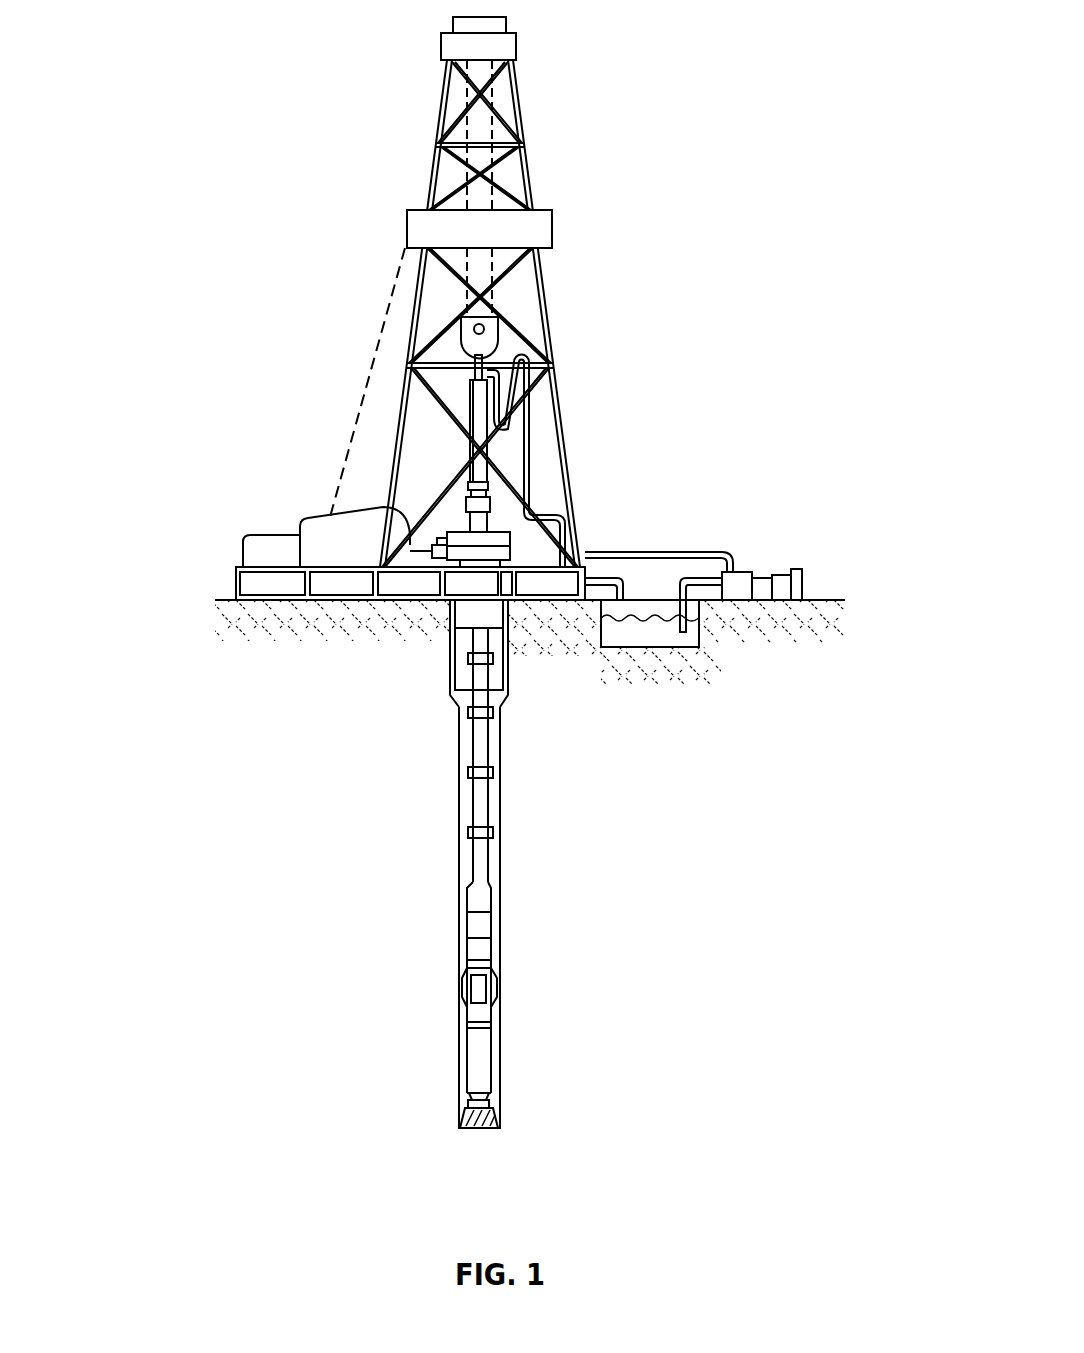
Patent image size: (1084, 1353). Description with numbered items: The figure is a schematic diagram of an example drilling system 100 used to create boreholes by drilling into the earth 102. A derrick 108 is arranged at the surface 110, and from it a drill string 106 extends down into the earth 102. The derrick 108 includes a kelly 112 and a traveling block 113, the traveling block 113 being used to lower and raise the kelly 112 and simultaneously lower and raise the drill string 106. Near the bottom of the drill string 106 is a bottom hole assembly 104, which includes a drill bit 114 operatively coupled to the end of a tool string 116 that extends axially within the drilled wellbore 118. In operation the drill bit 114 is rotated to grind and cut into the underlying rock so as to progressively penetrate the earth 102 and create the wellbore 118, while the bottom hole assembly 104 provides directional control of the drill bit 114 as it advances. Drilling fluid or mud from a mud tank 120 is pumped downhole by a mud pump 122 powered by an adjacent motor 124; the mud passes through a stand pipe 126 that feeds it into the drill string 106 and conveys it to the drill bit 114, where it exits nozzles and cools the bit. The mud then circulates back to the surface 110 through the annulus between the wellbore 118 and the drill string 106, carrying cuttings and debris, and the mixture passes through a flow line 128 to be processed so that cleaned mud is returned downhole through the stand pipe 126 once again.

The drilling system 100 is at (700, 272).
The earth 102 is at (318, 730).
The bottom hole assembly 104 is at (372, 986).
The drill string 106 is at (480, 810).
The derrick 108 is at (521, 121).
The surface 110 is at (225, 600).
The kelly 112 is at (475, 410).
The traveling block 113 is at (498, 334).
The drill bit 114 is at (500, 1126).
The tool string 116 is at (485, 1066).
The wellbore 118 is at (459, 770).
The mud tank 120 is at (680, 647).
The mud pump 122 is at (740, 572).
The motor 124 is at (782, 590).
The stand pipe 126 is at (529, 428).
The flow line 128 is at (620, 588).